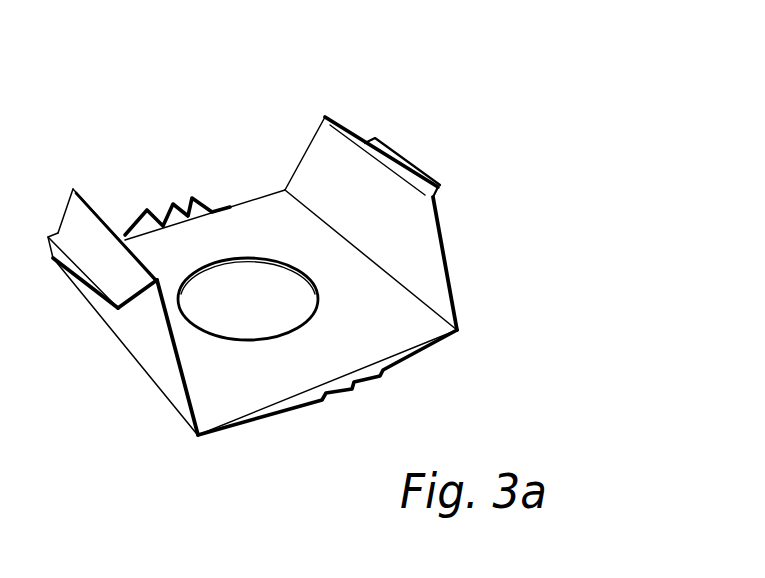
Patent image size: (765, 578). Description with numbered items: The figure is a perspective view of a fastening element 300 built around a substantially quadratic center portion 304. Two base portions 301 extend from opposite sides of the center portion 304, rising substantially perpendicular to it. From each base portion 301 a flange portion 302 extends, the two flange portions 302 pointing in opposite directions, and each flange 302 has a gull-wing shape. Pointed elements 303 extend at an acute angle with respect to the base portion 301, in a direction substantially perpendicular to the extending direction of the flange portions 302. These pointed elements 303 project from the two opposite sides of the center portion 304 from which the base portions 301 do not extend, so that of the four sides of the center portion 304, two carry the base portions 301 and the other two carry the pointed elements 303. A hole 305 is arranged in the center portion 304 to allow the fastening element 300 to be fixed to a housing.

The fastening element 300 is at (508, 134).
The base portion 301 is at (422, 237).
The flange portion 302 is at (398, 163).
The pointed element 303 is at (171, 201).
The center portion 304 is at (377, 338).
The hole 305 is at (257, 282).